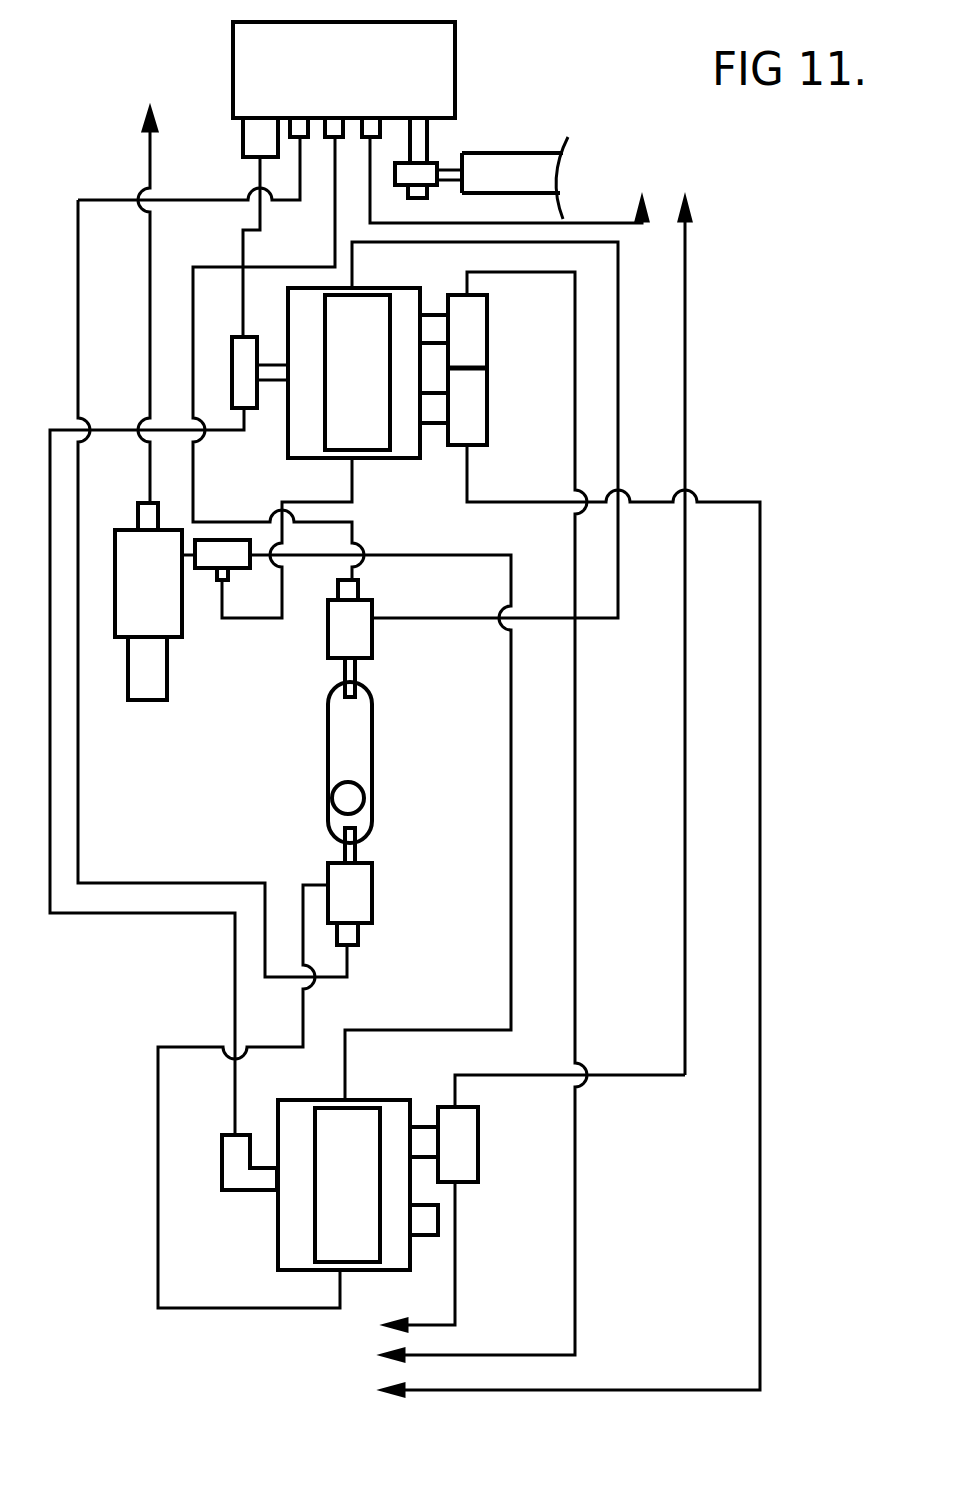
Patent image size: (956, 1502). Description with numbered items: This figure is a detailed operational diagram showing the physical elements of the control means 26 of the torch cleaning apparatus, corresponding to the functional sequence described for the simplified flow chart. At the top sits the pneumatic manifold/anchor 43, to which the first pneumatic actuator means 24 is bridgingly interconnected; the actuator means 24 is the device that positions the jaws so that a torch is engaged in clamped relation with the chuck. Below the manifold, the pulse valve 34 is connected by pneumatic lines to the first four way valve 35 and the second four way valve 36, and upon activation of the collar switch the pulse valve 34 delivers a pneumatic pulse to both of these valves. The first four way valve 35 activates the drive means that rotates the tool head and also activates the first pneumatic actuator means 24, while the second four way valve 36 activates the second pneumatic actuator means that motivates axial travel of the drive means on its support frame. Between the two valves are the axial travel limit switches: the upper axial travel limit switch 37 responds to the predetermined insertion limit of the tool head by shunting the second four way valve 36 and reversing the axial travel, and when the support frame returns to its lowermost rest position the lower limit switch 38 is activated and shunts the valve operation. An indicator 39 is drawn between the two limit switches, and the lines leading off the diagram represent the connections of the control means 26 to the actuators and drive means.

The pneumatic manifold/anchor 43 is at (323, 86).
The first pneumatic actuator means 24 is at (517, 165).
The first four way valve 35 is at (337, 383).
The pulse valve 34 is at (130, 598).
The upper axial travel limit switch 37 is at (340, 622).
The flow indicator 39 is at (364, 800).
The lower limit switch 38 is at (345, 890).
The second four way valve 36 is at (330, 1188).
The control means 26 is at (792, 610).